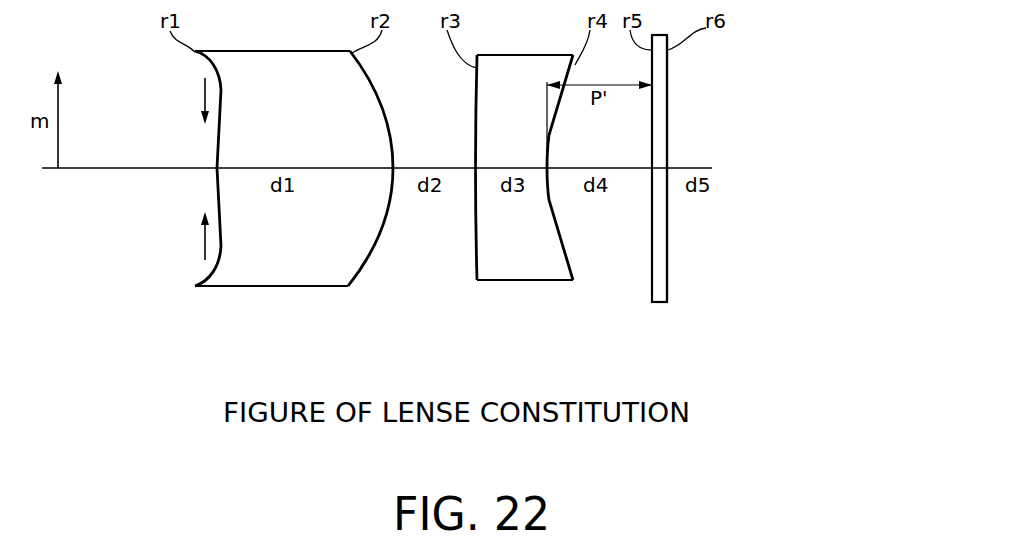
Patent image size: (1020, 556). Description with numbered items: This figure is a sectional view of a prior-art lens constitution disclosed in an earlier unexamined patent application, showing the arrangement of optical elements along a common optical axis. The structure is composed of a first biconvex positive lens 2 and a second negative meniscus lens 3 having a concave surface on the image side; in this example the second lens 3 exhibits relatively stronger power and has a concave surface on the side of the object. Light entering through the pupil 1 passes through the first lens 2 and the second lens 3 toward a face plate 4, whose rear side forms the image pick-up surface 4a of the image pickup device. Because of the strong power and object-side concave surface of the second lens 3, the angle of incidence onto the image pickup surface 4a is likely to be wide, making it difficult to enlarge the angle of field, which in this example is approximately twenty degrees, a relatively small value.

The pupil 1 is at (203, 90).
The first lens 2 is at (256, 287).
The second lens 3 is at (487, 283).
The face plate 4 is at (661, 303).
The image pick-up surface 4a is at (668, 222).